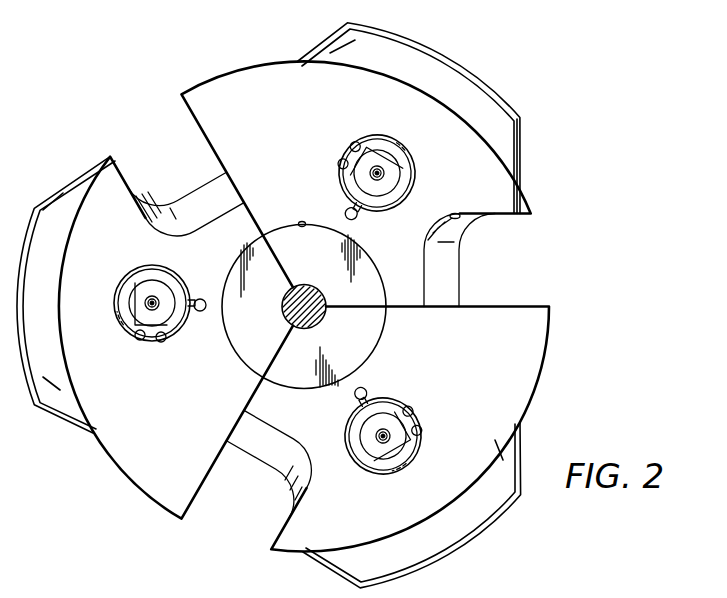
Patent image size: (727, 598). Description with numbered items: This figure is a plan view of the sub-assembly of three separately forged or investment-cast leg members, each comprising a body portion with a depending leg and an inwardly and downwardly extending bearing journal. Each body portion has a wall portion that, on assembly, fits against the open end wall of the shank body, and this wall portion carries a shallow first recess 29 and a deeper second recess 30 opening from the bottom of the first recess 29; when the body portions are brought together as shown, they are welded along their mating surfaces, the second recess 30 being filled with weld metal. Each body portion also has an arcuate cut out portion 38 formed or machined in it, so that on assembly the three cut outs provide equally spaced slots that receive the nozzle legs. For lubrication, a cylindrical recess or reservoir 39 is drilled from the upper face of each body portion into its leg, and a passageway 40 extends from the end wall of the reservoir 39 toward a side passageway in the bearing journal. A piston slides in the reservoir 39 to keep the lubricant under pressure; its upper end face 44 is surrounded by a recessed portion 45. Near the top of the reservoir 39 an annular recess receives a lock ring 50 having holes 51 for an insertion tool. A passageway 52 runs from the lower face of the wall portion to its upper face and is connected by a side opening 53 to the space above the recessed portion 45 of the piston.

The first recess 29 is at (301, 222).
The second recess 30 is at (311, 289).
The arcuate cut out portion 38 is at (134, 188).
The cylindrical recess or reservoir 39 is at (409, 152).
The passageway 40 is at (410, 150).
The upper end face 44 is at (385, 185).
The recessed portion 45 is at (377, 147).
The lock ring 50 is at (390, 140).
The holes 51 is at (350, 146).
The passageway 52 is at (353, 221).
The side opening 53 is at (352, 208).